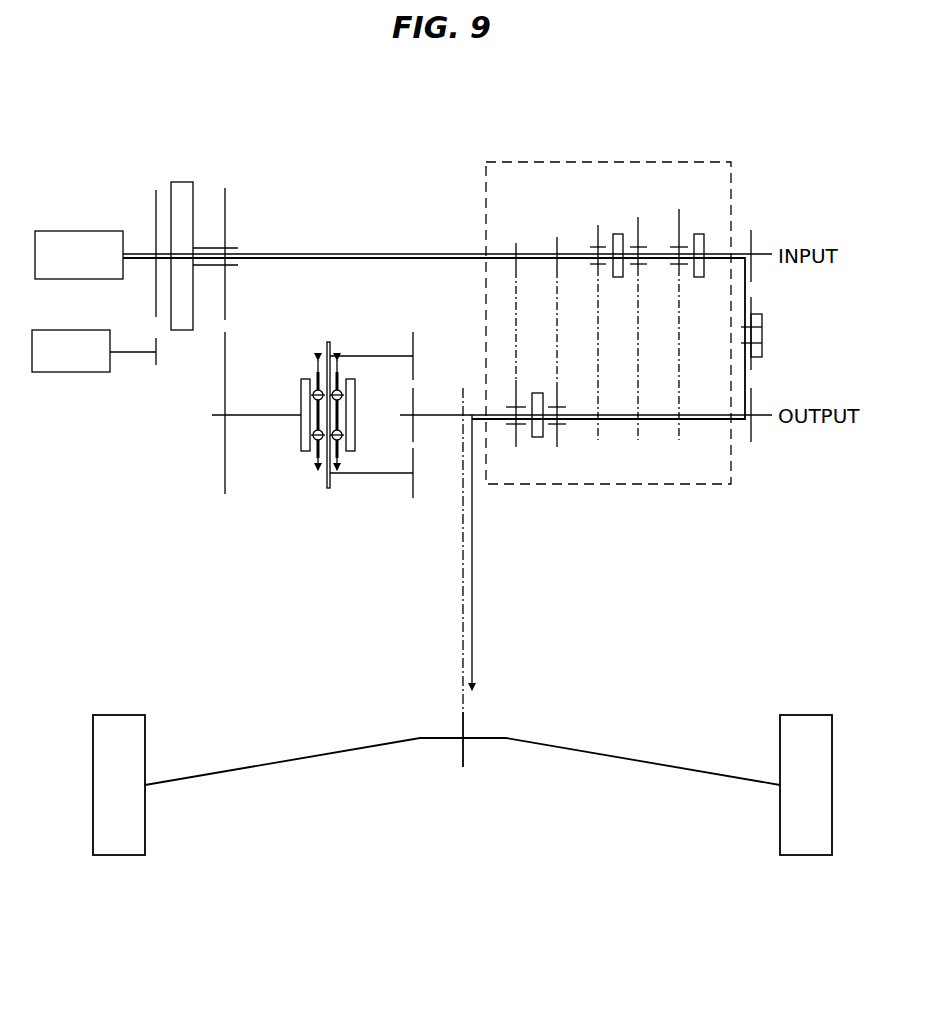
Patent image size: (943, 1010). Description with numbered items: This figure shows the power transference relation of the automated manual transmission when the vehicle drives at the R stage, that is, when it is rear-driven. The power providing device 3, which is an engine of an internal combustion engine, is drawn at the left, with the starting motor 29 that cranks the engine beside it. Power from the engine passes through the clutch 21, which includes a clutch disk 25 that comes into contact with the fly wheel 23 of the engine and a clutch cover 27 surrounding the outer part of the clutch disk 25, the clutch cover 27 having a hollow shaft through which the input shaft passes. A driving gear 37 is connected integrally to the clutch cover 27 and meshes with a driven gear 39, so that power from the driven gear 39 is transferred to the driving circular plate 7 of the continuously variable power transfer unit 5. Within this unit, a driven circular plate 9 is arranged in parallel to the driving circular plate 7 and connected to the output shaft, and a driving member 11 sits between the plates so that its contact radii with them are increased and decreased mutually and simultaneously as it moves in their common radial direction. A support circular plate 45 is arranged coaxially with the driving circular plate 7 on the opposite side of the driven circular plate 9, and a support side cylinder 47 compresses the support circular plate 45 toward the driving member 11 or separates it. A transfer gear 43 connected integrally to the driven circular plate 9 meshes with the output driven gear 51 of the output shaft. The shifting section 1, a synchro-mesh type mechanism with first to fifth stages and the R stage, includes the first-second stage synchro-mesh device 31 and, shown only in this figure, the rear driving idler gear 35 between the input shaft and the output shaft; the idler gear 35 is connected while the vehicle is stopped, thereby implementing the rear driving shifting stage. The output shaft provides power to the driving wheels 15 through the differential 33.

The shifting section 1 is at (637, 162).
The power providing device 3 is at (48, 232).
The continuously variable power transfer unit 5 is at (346, 429).
The driving circular plate 7 is at (311, 380).
The driven circular plate 9 is at (330, 345).
The driving member 11 is at (301, 443).
The driving wheel 15 is at (120, 720).
The clutch 21 is at (174, 337).
The fly wheel 23 is at (156, 197).
The clutch disk 25 is at (182, 198).
The clutch cover 27 is at (193, 200).
The starting motor 29 is at (71, 375).
The first-second stage synchro-mesh device 31 is at (537, 440).
The differential 33 is at (425, 715).
The rear driving idler gear 35 is at (752, 305).
The driving gear 37 is at (228, 198).
The driven gear 39 is at (225, 458).
The transfer gear 43 is at (415, 338).
The support circular plate 45 is at (340, 458).
The support side cylinder 47 is at (355, 450).
The output driven gear 51 is at (416, 400).